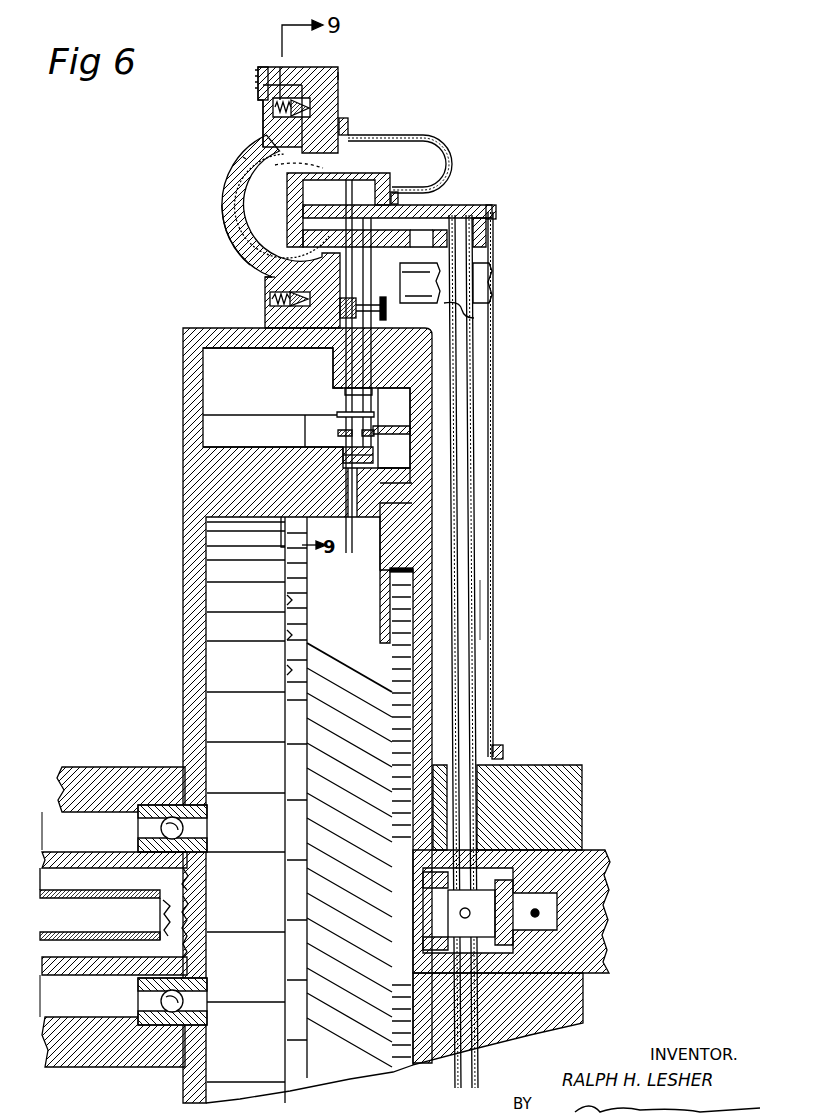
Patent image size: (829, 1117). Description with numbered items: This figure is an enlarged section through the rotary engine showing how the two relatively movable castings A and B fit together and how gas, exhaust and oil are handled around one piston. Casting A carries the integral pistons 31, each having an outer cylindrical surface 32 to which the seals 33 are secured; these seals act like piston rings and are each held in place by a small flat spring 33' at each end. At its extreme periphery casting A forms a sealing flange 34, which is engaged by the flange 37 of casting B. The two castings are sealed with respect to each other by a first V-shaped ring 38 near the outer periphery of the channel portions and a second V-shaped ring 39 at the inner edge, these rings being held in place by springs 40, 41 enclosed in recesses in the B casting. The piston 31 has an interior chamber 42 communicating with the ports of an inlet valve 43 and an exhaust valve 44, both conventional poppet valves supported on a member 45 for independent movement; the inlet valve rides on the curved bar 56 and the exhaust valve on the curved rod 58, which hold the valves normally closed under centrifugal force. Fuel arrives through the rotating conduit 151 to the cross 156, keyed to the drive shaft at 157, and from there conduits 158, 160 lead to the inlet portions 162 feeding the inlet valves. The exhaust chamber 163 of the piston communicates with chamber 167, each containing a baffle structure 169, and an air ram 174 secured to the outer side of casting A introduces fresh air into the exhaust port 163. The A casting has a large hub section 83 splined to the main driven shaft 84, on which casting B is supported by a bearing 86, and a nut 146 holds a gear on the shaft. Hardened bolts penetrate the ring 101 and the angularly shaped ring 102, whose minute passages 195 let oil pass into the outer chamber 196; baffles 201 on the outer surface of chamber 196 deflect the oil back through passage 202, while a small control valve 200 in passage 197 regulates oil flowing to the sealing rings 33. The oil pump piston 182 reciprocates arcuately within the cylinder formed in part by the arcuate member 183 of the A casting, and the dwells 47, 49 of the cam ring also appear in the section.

The baffles 201 is at (200, 390).
The seals 33 is at (263, 231).
The outer cylindrical surface 32 is at (240, 256).
The pistons 31 is at (262, 240).
The interior chamber 42 is at (368, 185).
The first V-shaped ring 38 is at (265, 279).
The spring 41 is at (272, 299).
The sealing flange 34 is at (285, 68).
The casting A is at (339, 76).
The casting B is at (243, 158).
The spring 40 is at (272, 107).
The second V-shaped ring 39 is at (310, 106).
The flange 37 is at (272, 128).
The small flat spring 33' is at (371, 122).
The air ram 174 is at (452, 140).
The inlet valve 43 is at (343, 200).
The inlet portions 162 is at (447, 208).
The exhaust valve 44 is at (372, 284).
The dwells 47 is at (350, 518).
The small control valve 200 is at (388, 314).
The exhaust chamber 163 is at (399, 264).
The baffle structure 169 is at (484, 318).
The conduit 158 is at (463, 384).
The conduit 160 is at (456, 1084).
The chamber 167 is at (487, 603).
The arcuate member 183 is at (410, 470).
The piston 182 is at (412, 503).
The passage 197 is at (298, 362).
The outer chamber 196 is at (205, 432).
The member 45 is at (338, 428).
The curved rod 58 is at (345, 390).
The curved bar 56 is at (337, 413).
The dwells 49 is at (376, 428).
The nut 146 is at (381, 455).
The ring 101 is at (280, 573).
The minute passages 195 is at (300, 606).
The passage 202 is at (300, 650).
The angularly shaped ring 102 is at (365, 672).
The cross 156 is at (450, 930).
The hub section 83 is at (545, 780).
The key 157 is at (539, 913).
The main driven shaft 84 is at (100, 850).
The bearing 86 is at (208, 834).
The rotating conduit 151 is at (154, 890).